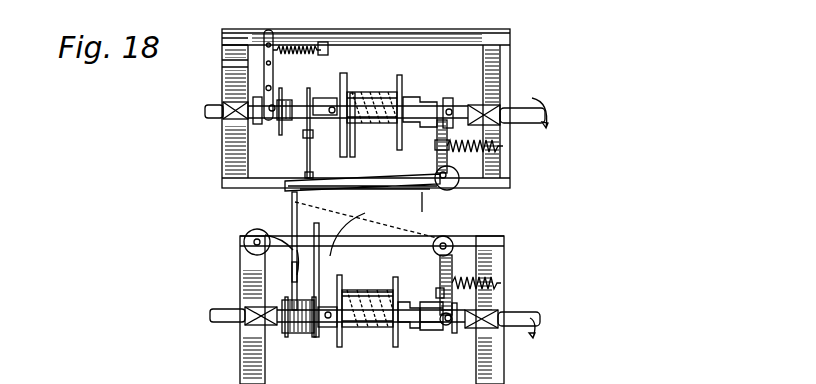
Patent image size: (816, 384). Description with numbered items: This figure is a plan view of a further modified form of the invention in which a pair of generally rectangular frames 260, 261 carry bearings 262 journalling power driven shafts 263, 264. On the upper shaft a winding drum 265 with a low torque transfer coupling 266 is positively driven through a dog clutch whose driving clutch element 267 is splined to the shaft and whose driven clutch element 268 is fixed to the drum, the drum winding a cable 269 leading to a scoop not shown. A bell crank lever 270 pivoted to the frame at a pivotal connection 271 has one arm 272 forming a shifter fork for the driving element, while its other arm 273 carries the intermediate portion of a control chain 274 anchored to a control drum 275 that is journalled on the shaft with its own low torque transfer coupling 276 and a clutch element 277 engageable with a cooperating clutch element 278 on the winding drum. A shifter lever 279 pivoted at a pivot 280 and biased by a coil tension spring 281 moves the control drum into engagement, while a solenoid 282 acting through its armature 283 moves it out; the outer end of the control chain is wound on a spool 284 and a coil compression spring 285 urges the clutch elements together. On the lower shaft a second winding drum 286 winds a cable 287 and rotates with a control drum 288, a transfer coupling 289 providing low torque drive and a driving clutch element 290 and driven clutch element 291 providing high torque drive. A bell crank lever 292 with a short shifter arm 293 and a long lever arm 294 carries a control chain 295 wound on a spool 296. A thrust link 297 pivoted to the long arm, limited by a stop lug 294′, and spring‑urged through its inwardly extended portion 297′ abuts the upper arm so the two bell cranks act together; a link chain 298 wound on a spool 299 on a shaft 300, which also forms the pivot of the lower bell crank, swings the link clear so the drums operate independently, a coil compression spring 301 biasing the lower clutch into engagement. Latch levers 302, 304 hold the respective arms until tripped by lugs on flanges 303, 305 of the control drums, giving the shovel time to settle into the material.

The rectangular frame 260 is at (503, 63).
The rectangular frame 261 is at (504, 368).
The bearings 262 is at (223, 120).
The power driven shaft 263 is at (538, 126).
The power driven shaft 264 is at (535, 320).
The winding drum 265 is at (390, 84).
The low torque transfer coupling 266 is at (314, 161).
The driving clutch element 267 is at (434, 104).
The driven clutch element 268 is at (418, 95).
The cable 269 is at (356, 161).
The bell crank lever 270 is at (363, 195).
The pivotal connection 271 is at (452, 188).
The lever arm 272 is at (438, 150).
The lever arm 273 is at (422, 206).
The control chain 274 is at (308, 158).
The control drum 275 is at (284, 128).
The low torque transfer coupling 276 is at (312, 98).
The clutch element 277 is at (321, 97).
The clutch element 278 is at (330, 100).
The shifter lever 279 is at (265, 88).
The pivot 280 is at (276, 32).
The coil tension spring 281 is at (297, 46).
The solenoid 282 is at (250, 62).
The armature 283 is at (258, 62).
The spool 284 is at (463, 182).
The coil compression spring 285 is at (501, 152).
The second winding drum 286 is at (347, 349).
The cable 287 is at (370, 346).
The control drum 288 is at (303, 332).
The transfer coupling 289 is at (327, 337).
The driving clutch element 290 is at (437, 331).
The driven clutch element 291 is at (400, 330).
The bell crank lever 292 is at (405, 254).
The lever arm 293 is at (447, 293).
The lever arm 294 is at (372, 254).
The stop lug 294′ is at (263, 230).
The control chain 295 is at (293, 277).
The spool 296 is at (244, 249).
The thrust link 297 is at (340, 240).
The inwardly extended portion 297′ is at (293, 268).
The link chain 298 is at (355, 190).
The spool 299 is at (449, 237).
The shaft 300 is at (453, 253).
The coil compression spring 301 is at (499, 283).
The latch lever 302 is at (290, 196).
The flange 303 is at (324, 42).
The latch lever 304 is at (307, 283).
The flange 305 is at (283, 330).